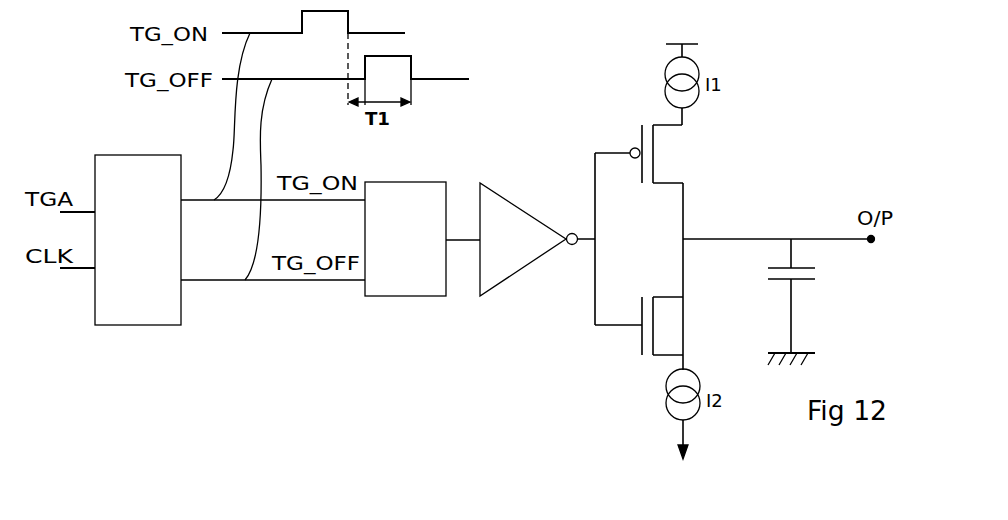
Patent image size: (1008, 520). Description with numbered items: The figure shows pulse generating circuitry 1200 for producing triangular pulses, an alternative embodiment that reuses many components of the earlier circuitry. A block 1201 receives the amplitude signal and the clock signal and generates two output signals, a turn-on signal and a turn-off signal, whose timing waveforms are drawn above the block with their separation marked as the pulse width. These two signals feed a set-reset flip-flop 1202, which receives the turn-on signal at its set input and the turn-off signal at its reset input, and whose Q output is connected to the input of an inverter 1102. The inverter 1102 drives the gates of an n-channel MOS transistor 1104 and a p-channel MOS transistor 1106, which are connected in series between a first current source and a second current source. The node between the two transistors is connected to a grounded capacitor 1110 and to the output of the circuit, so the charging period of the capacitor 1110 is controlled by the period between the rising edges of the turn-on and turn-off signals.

The pulse generating circuitry 1200 is at (246, 371).
The block 1201 is at (135, 162).
The set-reset flip-flop 1202 is at (417, 285).
The inverter 1102 is at (517, 228).
The n-channel MOS transistor 1104 is at (665, 155).
The p-channel MOS transistor 1106 is at (665, 322).
The capacitor 1110 is at (817, 270).